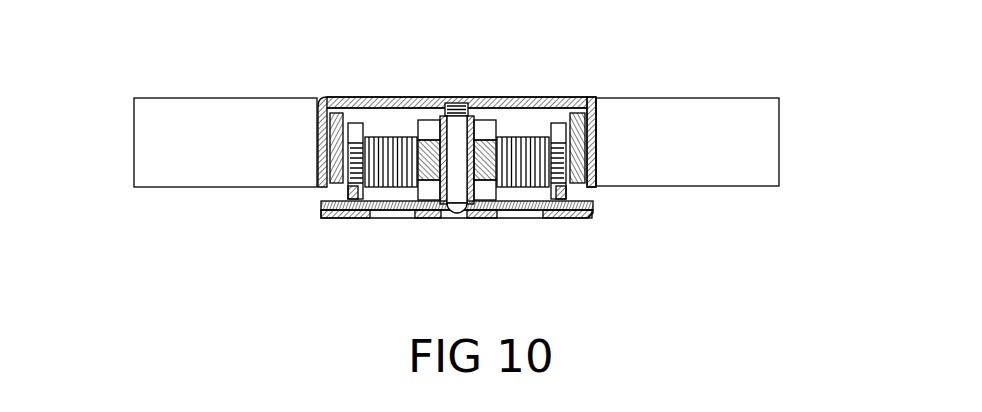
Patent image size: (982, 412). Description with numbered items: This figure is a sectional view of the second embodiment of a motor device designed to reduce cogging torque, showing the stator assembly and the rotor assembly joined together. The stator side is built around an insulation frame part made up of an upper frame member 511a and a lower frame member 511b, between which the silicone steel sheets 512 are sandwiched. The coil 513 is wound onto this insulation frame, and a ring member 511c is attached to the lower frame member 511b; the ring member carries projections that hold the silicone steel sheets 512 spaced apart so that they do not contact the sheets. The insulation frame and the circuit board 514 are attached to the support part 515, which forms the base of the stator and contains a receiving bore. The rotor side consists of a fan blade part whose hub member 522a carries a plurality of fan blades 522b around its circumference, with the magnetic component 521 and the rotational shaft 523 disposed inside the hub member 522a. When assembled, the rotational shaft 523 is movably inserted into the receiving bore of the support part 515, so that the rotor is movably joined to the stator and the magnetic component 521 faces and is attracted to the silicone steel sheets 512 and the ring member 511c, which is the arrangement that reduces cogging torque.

The upper frame member 511a is at (330, 102).
The lower frame member 511b is at (597, 210).
The ring member 511c is at (350, 186).
The silicone steel sheets 512 is at (593, 174).
The coil 513 is at (395, 137).
The circuit board 514 is at (402, 207).
The support part 515 is at (588, 221).
The magnetic component 521 is at (596, 99).
The hub member 522a is at (503, 101).
The fan blades 522b is at (175, 108).
The rotational shaft 523 is at (458, 182).